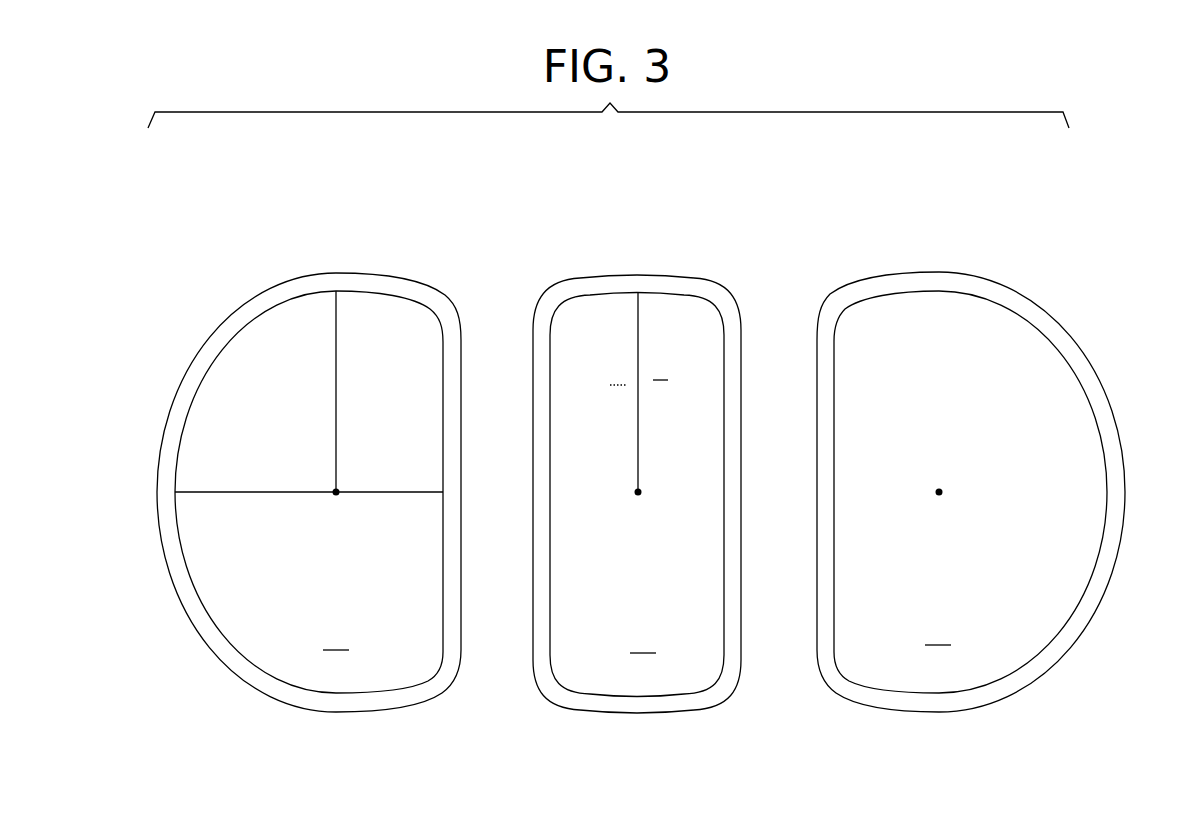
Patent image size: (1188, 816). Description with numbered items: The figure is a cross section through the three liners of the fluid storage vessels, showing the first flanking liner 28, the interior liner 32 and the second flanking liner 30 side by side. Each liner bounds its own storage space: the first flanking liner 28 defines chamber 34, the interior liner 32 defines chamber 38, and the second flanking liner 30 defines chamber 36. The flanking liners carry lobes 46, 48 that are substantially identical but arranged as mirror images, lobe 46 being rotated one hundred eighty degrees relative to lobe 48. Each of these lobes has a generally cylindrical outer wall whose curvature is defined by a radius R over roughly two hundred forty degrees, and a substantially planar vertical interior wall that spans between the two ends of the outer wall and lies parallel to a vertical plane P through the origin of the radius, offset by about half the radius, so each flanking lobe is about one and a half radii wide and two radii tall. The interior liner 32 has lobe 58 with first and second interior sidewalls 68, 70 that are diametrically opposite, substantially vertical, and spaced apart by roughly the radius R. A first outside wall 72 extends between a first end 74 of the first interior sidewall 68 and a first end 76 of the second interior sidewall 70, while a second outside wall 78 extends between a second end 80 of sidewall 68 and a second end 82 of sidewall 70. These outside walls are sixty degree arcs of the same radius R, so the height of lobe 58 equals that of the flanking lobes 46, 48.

The first flanking liner 28 is at (217, 217).
The second flanking liner 30 is at (1051, 235).
The interior liner 32 is at (595, 196).
The chamber 34 is at (309, 492).
The chamber 36 is at (970, 492).
The chamber 38 is at (637, 495).
The lobe 46 is at (313, 257).
The lobe 48 is at (947, 259).
The lobe 58 is at (618, 264).
The first interior sidewall 68 is at (552, 418).
The second interior sidewall 70 is at (724, 522).
The first outside wall 72 is at (637, 712).
The first end 74 is at (540, 682).
The first end 76 is at (728, 684).
The second outside wall 78 is at (660, 276).
The second end 80 is at (528, 300).
The second end 82 is at (745, 298).